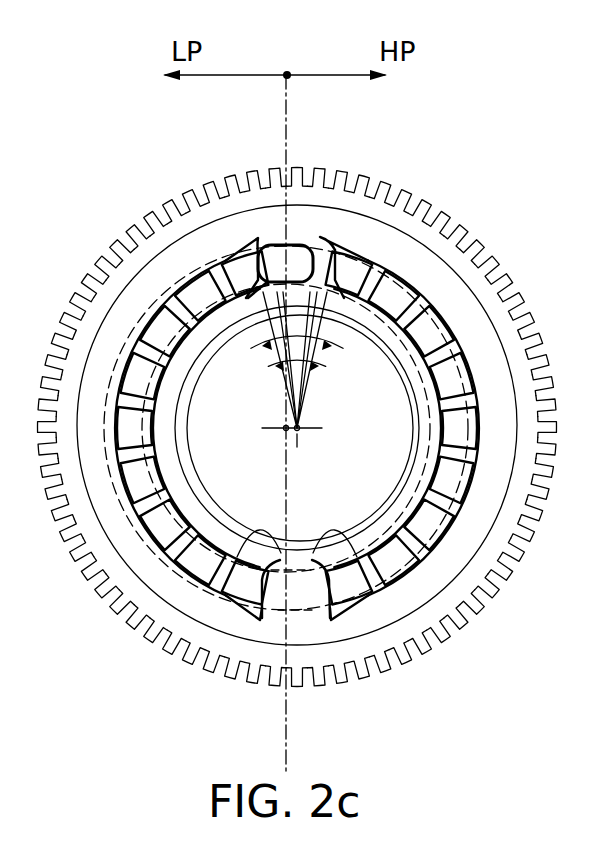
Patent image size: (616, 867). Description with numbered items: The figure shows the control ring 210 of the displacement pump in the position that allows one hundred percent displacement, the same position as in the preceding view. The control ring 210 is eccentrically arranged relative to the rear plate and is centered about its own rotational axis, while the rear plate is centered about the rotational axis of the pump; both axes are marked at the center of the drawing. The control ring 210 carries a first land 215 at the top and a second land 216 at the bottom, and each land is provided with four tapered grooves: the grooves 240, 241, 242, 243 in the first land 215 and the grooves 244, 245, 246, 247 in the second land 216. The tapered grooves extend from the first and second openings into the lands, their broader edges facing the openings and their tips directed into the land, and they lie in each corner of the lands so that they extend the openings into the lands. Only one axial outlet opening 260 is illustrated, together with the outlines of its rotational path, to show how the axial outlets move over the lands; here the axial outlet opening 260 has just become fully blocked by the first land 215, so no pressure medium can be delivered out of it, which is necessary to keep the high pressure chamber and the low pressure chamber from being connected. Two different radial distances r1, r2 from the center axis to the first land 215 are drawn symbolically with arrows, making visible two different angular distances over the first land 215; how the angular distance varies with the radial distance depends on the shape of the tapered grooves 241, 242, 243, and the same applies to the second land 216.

The control ring 210 is at (522, 137).
The first land 215 is at (333, 238).
The second land 216 is at (298, 593).
The tapered groove 240 is at (232, 340).
The tapered groove 241 is at (266, 236).
The tapered groove 242 is at (336, 275).
The tapered groove 243 is at (318, 236).
The tapered groove 244 is at (315, 620).
The tapered groove 245 is at (378, 545).
The tapered groove 246 is at (285, 612).
The tapered groove 247 is at (240, 555).
The axial outlet opening 260 is at (302, 245).
The radial distance r1 is at (305, 408).
The radial distance r2 is at (340, 400).